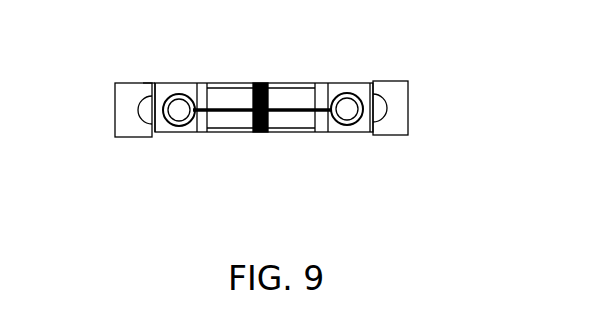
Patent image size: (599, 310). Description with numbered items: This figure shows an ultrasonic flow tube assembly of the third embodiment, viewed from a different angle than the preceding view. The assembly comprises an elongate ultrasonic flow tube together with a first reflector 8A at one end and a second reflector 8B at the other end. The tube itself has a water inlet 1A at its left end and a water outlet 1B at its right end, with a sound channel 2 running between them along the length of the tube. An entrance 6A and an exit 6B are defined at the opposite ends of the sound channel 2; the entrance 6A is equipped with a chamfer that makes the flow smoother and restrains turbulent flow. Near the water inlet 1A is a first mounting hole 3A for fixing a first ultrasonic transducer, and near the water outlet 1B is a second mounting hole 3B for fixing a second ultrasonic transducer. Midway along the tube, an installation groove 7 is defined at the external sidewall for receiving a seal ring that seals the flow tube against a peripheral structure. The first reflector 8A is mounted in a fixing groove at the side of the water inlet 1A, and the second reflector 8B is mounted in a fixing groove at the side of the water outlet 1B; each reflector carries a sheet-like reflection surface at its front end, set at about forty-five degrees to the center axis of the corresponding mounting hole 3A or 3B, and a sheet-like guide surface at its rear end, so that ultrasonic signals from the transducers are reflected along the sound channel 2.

The sound channel 2 is at (239, 121).
The installation groove 7 is at (260, 82).
The water inlet 1A is at (92, 130).
The water outlet 1B is at (488, 63).
The first mounting hole 3A is at (170, 94).
The second mounting hole 3B is at (348, 90).
The entrance 6A is at (201, 128).
The exit 6B is at (328, 124).
The first reflector 8A is at (115, 109).
The second reflector 8B is at (408, 105).